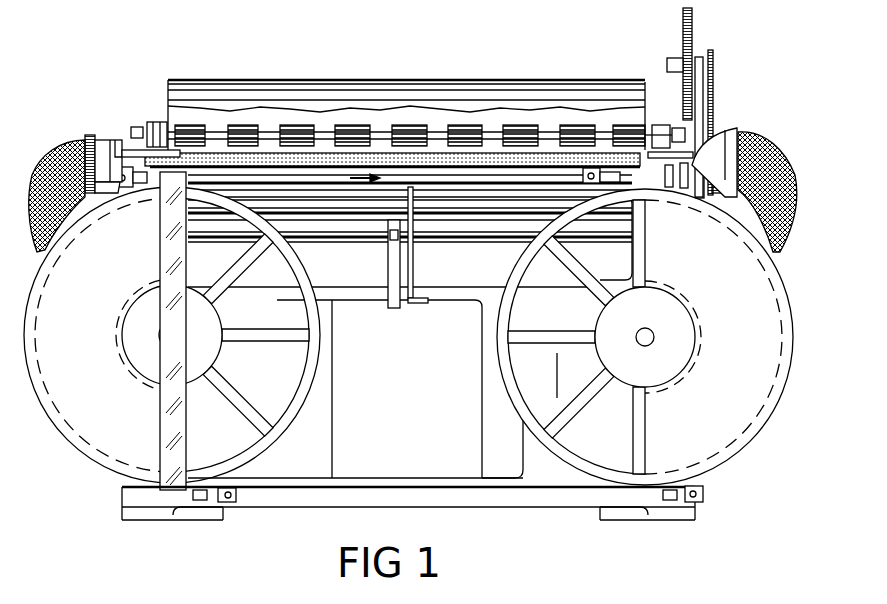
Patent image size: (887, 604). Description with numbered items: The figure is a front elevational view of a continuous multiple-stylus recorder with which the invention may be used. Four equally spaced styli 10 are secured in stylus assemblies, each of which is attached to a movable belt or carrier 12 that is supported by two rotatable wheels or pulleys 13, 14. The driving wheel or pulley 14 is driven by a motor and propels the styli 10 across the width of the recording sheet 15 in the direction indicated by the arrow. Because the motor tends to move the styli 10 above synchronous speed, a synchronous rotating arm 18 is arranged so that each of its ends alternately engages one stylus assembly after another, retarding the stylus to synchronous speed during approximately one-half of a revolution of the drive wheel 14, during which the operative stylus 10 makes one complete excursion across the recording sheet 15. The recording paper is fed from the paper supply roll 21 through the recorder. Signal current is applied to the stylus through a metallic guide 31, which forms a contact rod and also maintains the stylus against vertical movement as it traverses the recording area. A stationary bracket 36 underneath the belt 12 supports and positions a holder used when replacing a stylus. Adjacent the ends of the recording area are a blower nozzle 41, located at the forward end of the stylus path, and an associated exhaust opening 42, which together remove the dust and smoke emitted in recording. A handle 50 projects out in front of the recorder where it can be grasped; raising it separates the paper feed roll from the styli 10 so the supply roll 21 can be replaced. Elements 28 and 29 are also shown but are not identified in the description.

The styli 10 is at (118, 196).
The movable belt or carrier 12 is at (492, 490).
The rotatable wheel or pulley 13 is at (313, 343).
The driving wheel or pulley 14 is at (502, 348).
The recording sheet 15 is at (338, 112).
The synchronous rotating arm 18 is at (167, 252).
The paper supply roll 21 is at (513, 100).
The threaded adjusting rod 28 is at (692, 33).
The guide rod 29 is at (715, 85).
The metallic guide 31 is at (435, 163).
The stationary bracket 36 is at (415, 270).
The blower nozzle 41 is at (712, 145).
The exhaust opening 42 is at (110, 153).
The handle 50 is at (390, 270).